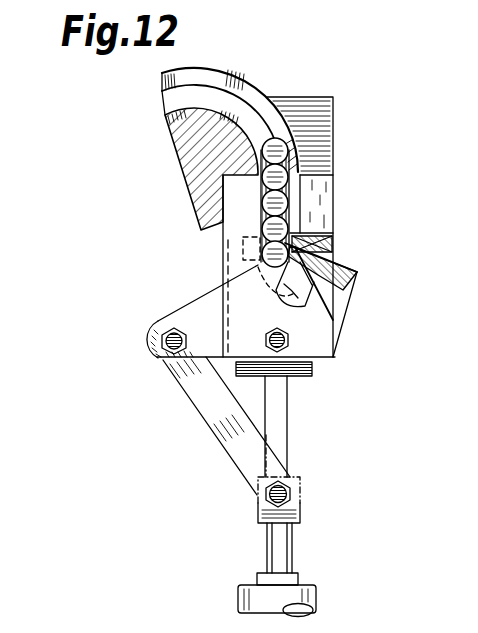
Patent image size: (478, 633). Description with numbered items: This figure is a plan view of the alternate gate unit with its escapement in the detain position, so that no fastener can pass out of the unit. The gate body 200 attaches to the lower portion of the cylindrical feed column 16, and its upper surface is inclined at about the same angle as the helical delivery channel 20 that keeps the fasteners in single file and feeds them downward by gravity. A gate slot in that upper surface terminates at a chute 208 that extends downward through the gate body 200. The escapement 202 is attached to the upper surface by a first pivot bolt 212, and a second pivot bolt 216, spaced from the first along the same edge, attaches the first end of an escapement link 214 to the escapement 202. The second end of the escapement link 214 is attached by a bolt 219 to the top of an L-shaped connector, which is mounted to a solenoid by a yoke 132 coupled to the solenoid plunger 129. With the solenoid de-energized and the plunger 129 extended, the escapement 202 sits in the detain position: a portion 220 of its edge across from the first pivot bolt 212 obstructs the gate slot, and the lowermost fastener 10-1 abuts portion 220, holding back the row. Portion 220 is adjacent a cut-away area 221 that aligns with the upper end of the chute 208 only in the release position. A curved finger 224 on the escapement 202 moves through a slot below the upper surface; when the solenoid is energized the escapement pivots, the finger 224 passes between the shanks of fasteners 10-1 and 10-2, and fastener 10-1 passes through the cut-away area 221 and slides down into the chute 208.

The feed column 16 is at (248, 78).
The delivery channel 20 is at (172, 97).
The gate body 200 is at (337, 137).
The fastener 10-2 is at (290, 229).
The lowermost fastener 10-1 is at (300, 238).
The portion of the edge of the escapement 220 is at (266, 268).
The escapement 202 is at (207, 318).
The finger 224 is at (345, 263).
The cut-away area 221 is at (343, 296).
The chute 208 is at (327, 327).
The pivot bolt 212 is at (320, 362).
The second pivot bolt 216 is at (157, 350).
The escapement link 214 is at (213, 400).
The bolt 219 is at (300, 504).
The yoke 132 is at (262, 518).
The plunger 129 is at (290, 540).